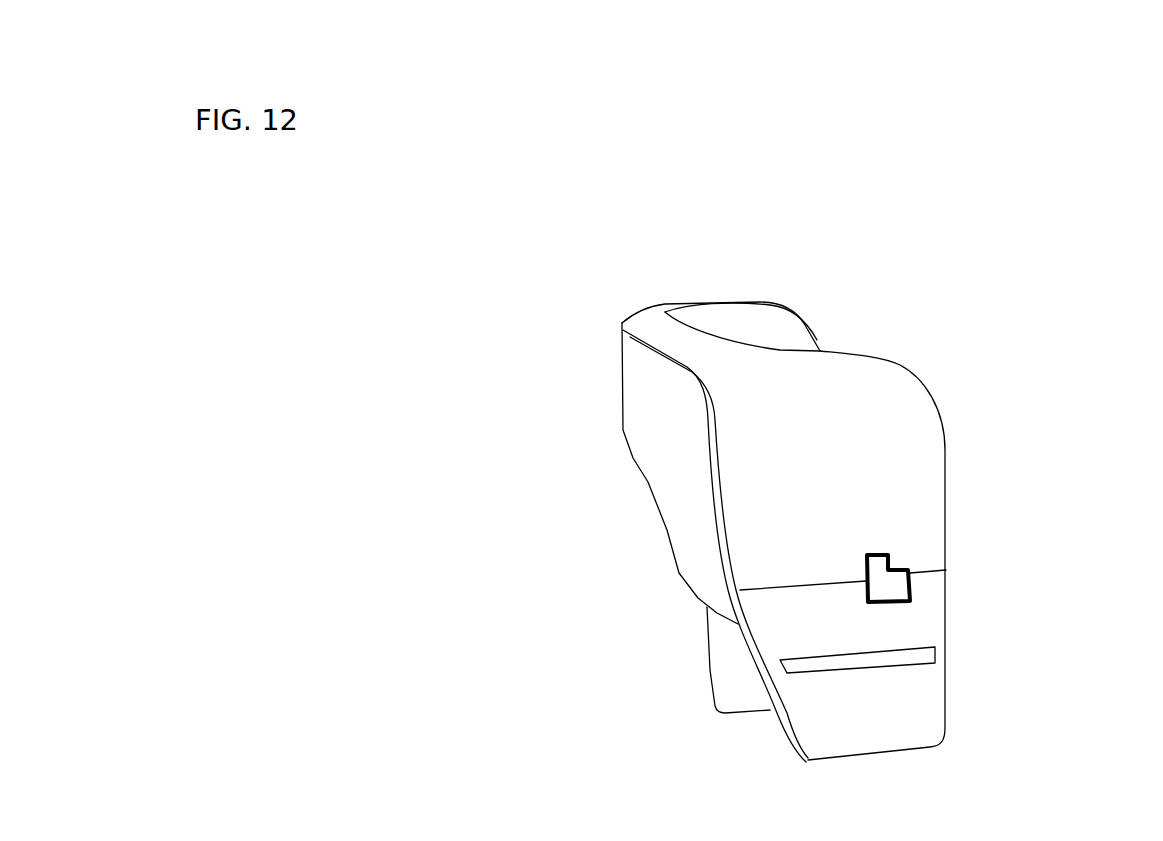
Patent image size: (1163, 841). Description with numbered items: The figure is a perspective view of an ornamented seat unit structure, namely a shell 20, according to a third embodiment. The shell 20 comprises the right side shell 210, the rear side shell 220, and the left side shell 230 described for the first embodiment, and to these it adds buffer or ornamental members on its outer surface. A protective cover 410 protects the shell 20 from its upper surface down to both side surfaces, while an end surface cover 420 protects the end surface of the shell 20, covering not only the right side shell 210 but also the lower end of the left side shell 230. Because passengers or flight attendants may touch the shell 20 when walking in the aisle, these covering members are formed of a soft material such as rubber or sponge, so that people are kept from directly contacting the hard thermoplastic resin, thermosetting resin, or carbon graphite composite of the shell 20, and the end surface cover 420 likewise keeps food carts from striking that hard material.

The shell 20 is at (878, 289).
The right side shell 210 is at (888, 582).
The rear side shell 220 is at (640, 436).
The left side shell 230 is at (692, 300).
The protective cover 410 is at (898, 433).
The end surface cover 420 is at (788, 642).